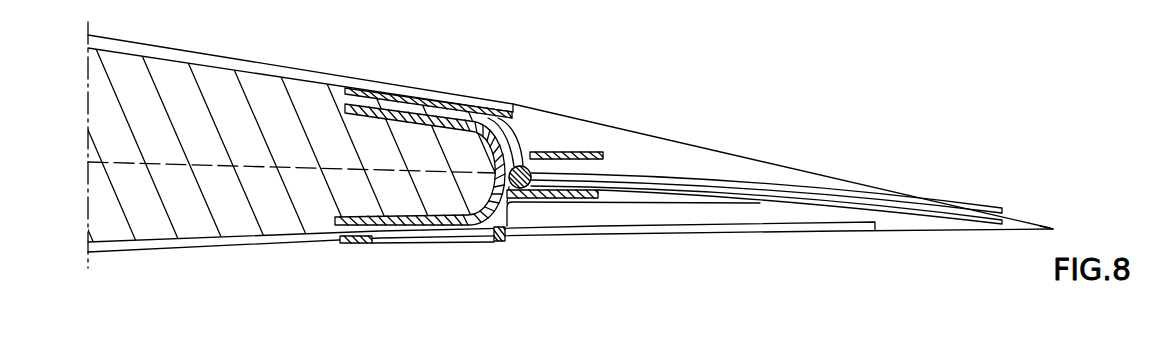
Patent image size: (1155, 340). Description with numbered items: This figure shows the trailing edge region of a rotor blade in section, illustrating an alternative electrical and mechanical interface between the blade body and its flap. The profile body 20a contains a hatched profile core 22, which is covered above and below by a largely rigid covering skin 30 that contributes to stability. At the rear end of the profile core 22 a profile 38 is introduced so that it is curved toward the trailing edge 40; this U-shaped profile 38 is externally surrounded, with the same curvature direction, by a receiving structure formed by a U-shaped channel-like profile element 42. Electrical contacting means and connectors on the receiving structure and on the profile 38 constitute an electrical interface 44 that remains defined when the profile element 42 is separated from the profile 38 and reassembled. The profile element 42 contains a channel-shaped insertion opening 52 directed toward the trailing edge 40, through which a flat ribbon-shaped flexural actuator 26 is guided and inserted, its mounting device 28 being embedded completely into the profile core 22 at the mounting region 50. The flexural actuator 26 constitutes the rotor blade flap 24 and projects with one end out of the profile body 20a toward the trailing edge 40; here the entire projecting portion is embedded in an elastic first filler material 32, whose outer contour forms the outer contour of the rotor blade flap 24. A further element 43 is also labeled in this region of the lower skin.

The profile body 20a is at (253, 54).
The profile core 22 is at (288, 100).
The rotor blade flap 24 is at (807, 145).
The flexural actuator 26 is at (733, 201).
The mounting device 28 is at (401, 252).
The covering skin 30 is at (223, 62).
The first filler material 32 is at (786, 205).
The profile 38 is at (494, 241).
The trailing edge 40 is at (1066, 212).
The profile element 42 is at (437, 226).
The doubler strip 43 is at (371, 244).
The electrical interface 44 is at (522, 163).
The mounting region 50 is at (502, 84).
The insertion opening 52 is at (596, 199).